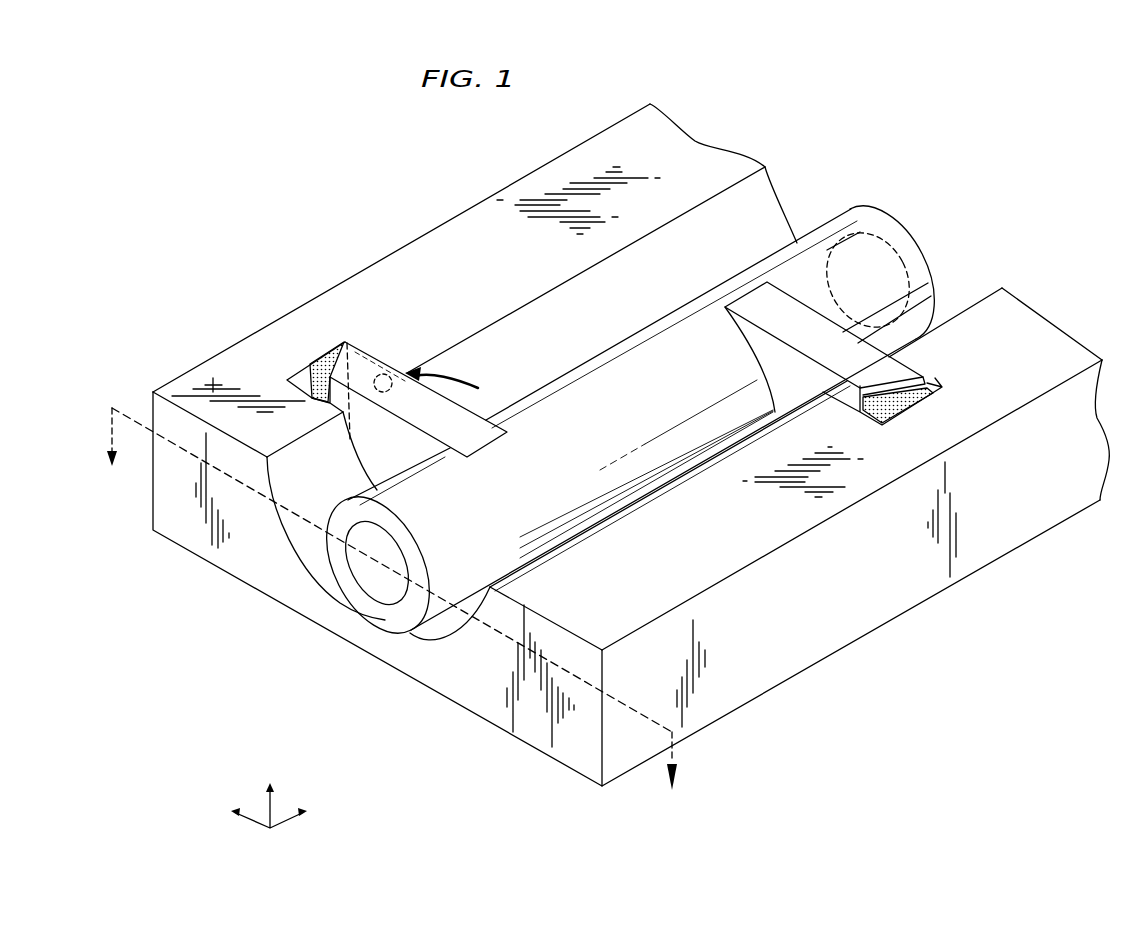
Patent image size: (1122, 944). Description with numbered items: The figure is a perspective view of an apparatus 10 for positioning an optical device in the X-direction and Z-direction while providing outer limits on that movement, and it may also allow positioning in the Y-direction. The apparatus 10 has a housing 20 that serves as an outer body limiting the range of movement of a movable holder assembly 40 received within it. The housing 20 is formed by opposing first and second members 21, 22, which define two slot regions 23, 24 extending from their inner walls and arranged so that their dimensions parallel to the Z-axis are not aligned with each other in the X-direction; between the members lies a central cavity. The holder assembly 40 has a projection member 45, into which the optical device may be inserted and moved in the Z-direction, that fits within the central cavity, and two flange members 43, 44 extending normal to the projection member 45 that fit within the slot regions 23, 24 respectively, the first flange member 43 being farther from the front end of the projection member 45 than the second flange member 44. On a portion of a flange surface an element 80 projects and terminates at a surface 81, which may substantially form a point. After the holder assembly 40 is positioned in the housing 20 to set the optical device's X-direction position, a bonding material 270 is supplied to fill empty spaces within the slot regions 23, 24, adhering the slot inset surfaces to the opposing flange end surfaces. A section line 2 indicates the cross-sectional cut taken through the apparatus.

The apparatus 10 is at (337, 185).
The housing 20 is at (710, 773).
The first member 21 is at (737, 683).
The second member 22 is at (212, 384).
The slot region 23 is at (946, 382).
The slot region 24 is at (301, 386).
The bonding material 270 is at (322, 357).
The holder assembly 40 is at (438, 645).
The first flange member 43 is at (818, 327).
The second flange member 44 is at (357, 367).
The projection member 45 is at (401, 488).
The element 80 is at (452, 382).
The surface 81 is at (430, 453).
The section line 2- 2 is at (379, 601).